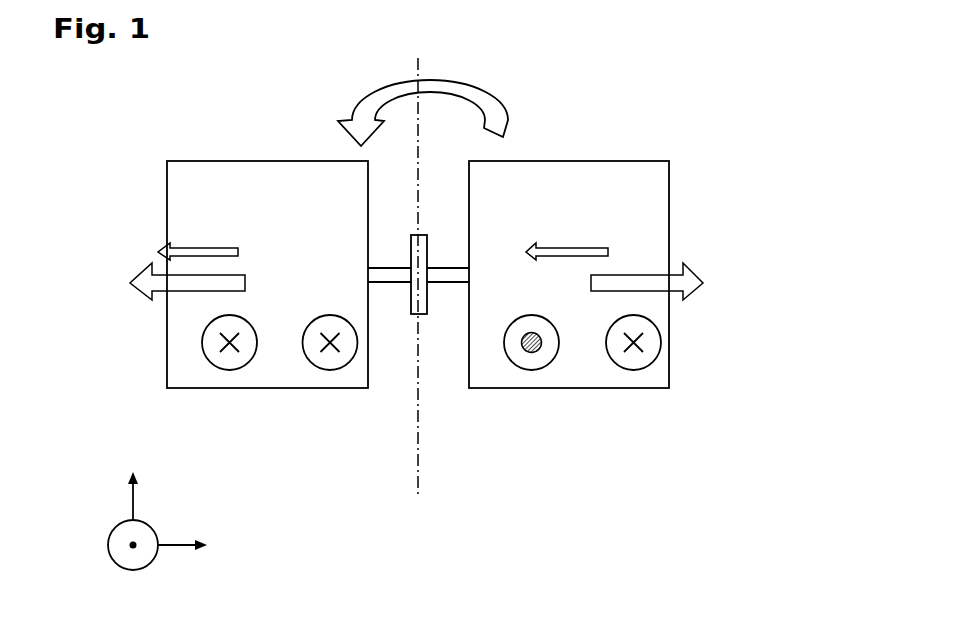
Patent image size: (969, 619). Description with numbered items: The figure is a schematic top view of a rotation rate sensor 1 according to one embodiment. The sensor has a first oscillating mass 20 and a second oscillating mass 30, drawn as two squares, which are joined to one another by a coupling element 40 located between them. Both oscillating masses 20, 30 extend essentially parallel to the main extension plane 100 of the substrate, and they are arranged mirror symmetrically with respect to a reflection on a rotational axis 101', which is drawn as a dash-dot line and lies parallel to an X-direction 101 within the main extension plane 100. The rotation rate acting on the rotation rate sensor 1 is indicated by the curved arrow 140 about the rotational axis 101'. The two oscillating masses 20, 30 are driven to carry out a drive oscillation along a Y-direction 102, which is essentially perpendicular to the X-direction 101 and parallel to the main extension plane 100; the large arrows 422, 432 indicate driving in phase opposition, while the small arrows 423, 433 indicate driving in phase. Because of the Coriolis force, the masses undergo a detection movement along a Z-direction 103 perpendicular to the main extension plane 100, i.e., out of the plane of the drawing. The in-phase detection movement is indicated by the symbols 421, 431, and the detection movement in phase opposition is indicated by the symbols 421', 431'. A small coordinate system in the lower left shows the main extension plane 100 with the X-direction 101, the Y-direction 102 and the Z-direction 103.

The rotation rate sensor 1 is at (724, 120).
The first oscillating mass 20 is at (218, 182).
The second oscillating mass 30 is at (617, 182).
The coupling element 40 is at (425, 275).
The rotational axis 101' is at (475, 251).
The rotation rate arrow 140 is at (495, 115).
The in-phase drive arrow of the first oscillating mass 423 is at (160, 252).
The phase-opposition drive arrow of the first oscillating mass 422 is at (143, 283).
The in-phase drive arrow of the second oscillating mass 433 is at (593, 248).
The phase-opposition drive arrow of the second oscillating mass 432 is at (697, 283).
The opposite-phase detection movement of the first oscillating mass 421' is at (237, 401).
The in-phase detection movement of the first oscillating mass 421 is at (333, 401).
The opposite-phase detection movement of the second oscillating mass 431' is at (540, 401).
The in-phase detection movement of the second oscillating mass 431 is at (635, 401).
The main extension plane 100 is at (214, 517).
The X-direction 101 is at (106, 488).
The Y-direction 102 is at (198, 564).
The Z-direction 103 is at (133, 545).